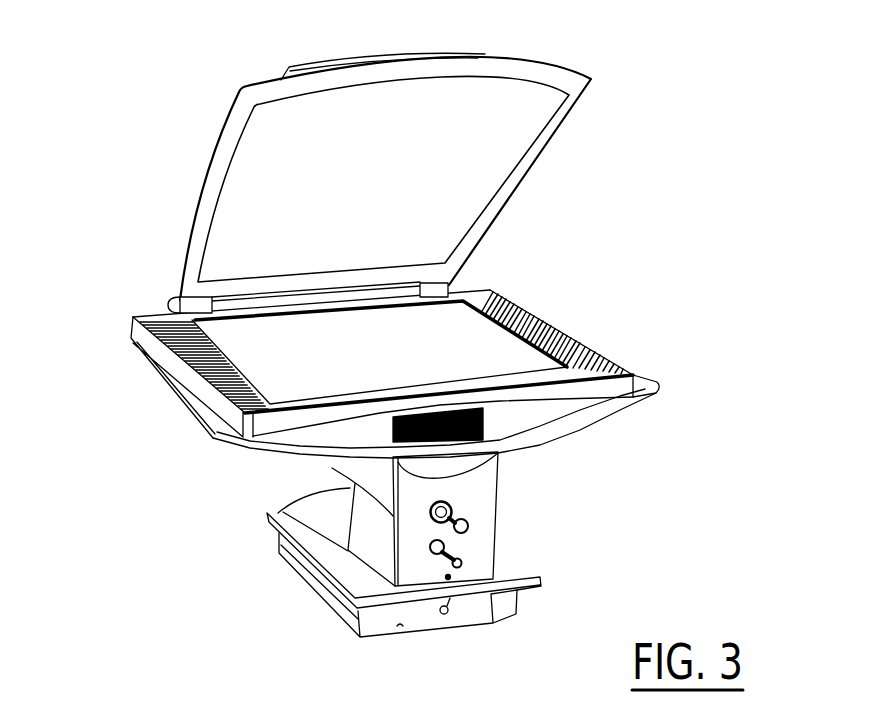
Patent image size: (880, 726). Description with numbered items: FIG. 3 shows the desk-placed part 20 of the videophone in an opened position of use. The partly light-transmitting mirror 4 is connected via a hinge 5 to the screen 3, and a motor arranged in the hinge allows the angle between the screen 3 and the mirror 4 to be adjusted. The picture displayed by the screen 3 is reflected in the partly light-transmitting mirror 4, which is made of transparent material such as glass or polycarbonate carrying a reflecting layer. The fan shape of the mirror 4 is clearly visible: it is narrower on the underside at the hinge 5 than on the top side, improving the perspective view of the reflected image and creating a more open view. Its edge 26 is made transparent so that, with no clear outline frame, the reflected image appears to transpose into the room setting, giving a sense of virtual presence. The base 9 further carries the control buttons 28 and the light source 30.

The part 20 is at (142, 178).
The edge 26 is at (546, 153).
The partly light-transmitting mirror 4 is at (473, 221).
The hinge 5 is at (170, 306).
The screen 3 is at (506, 353).
The base 9 is at (485, 503).
The control buttons 28 is at (467, 524).
The light source 30 is at (463, 591).